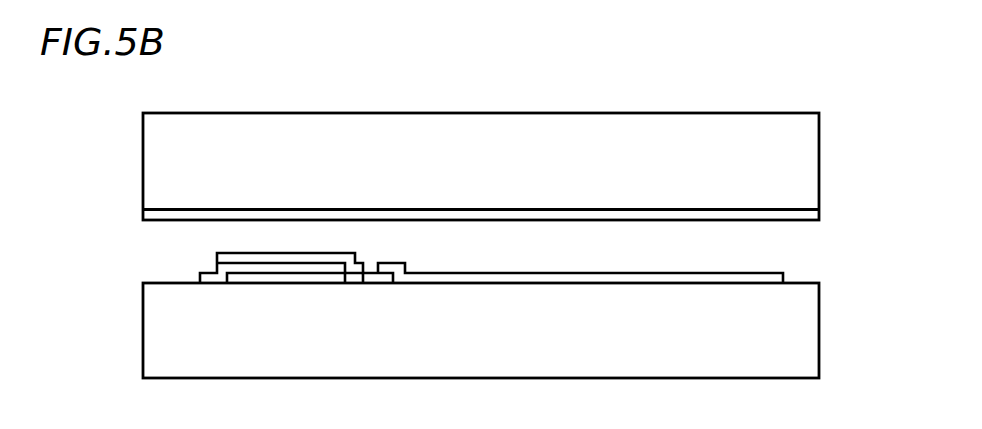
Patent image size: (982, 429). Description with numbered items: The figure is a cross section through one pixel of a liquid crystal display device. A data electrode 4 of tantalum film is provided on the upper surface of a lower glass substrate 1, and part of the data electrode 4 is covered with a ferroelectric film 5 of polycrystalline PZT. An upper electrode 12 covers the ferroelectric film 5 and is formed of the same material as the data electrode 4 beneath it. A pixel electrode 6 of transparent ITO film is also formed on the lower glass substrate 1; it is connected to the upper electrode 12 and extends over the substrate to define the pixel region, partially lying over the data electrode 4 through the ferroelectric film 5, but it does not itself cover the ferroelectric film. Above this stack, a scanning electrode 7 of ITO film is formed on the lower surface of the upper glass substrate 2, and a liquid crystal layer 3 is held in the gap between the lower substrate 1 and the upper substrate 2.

The lower glass substrate 1 is at (810, 344).
The upper glass substrate 2 is at (810, 172).
The liquid crystal layer 3 is at (828, 228).
The data electrode 4 is at (282, 278).
The ferroelectric film 5 is at (350, 278).
The pixel electrode 6 is at (623, 272).
The scanning electrode 7 is at (647, 213).
The upper electrode 12 is at (300, 255).